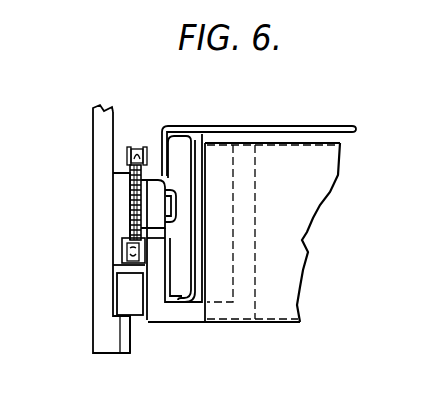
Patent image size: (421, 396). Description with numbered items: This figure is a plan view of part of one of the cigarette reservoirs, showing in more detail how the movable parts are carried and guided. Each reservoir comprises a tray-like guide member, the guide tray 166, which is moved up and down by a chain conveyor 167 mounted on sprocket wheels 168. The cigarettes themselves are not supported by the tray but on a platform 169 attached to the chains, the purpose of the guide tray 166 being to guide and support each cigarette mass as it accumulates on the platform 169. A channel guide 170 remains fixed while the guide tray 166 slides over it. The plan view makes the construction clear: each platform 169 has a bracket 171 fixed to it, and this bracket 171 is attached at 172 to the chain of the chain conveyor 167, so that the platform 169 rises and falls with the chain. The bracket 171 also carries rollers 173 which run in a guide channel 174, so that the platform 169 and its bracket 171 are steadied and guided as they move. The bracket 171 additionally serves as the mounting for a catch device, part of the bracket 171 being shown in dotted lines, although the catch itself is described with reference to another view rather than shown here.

The guide tray 166 is at (193, 170).
The chain conveyor 167 is at (136, 147).
The sprocket wheels 168 is at (130, 204).
The platform 169 is at (291, 238).
The channel guide 170 is at (168, 160).
The bracket 171 is at (248, 262).
The attachment point 172 is at (122, 253).
The rollers 173 is at (132, 302).
The guide channel 174 is at (117, 297).